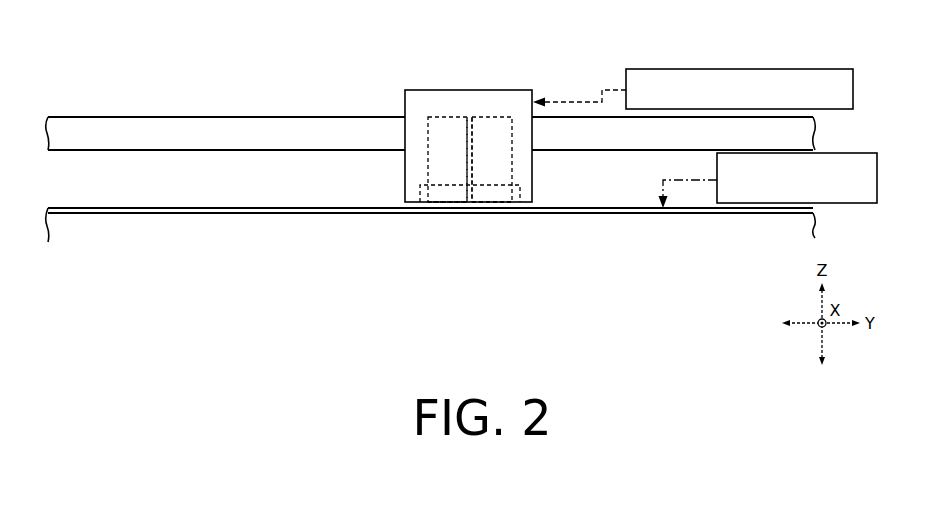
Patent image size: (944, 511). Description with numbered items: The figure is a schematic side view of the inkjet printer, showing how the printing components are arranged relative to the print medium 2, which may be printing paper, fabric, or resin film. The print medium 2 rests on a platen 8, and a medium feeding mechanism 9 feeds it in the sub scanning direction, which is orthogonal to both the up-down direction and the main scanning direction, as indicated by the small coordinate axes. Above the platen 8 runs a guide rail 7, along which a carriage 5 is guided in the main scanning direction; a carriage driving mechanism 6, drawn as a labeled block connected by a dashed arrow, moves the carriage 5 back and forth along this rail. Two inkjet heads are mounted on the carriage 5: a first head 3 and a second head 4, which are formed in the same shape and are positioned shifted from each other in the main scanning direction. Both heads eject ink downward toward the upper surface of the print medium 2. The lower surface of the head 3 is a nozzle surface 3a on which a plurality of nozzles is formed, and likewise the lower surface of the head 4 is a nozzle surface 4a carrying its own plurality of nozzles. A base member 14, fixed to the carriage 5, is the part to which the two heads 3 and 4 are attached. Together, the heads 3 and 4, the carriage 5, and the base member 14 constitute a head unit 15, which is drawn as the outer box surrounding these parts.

The print medium 2 is at (179, 208).
The inkjet head 3 is at (488, 117).
The nozzle surface 3a is at (493, 214).
The inkjet head 4 is at (448, 117).
The nozzle surface 4a is at (448, 214).
The carriage 5 is at (467, 90).
The carriage driving mechanism 6 is at (748, 69).
The guide rail 7 is at (250, 117).
The platen 8 is at (109, 208).
The medium feeding mechanism 9 is at (862, 153).
The base member 14 is at (420, 195).
The head unit 15 is at (405, 105).